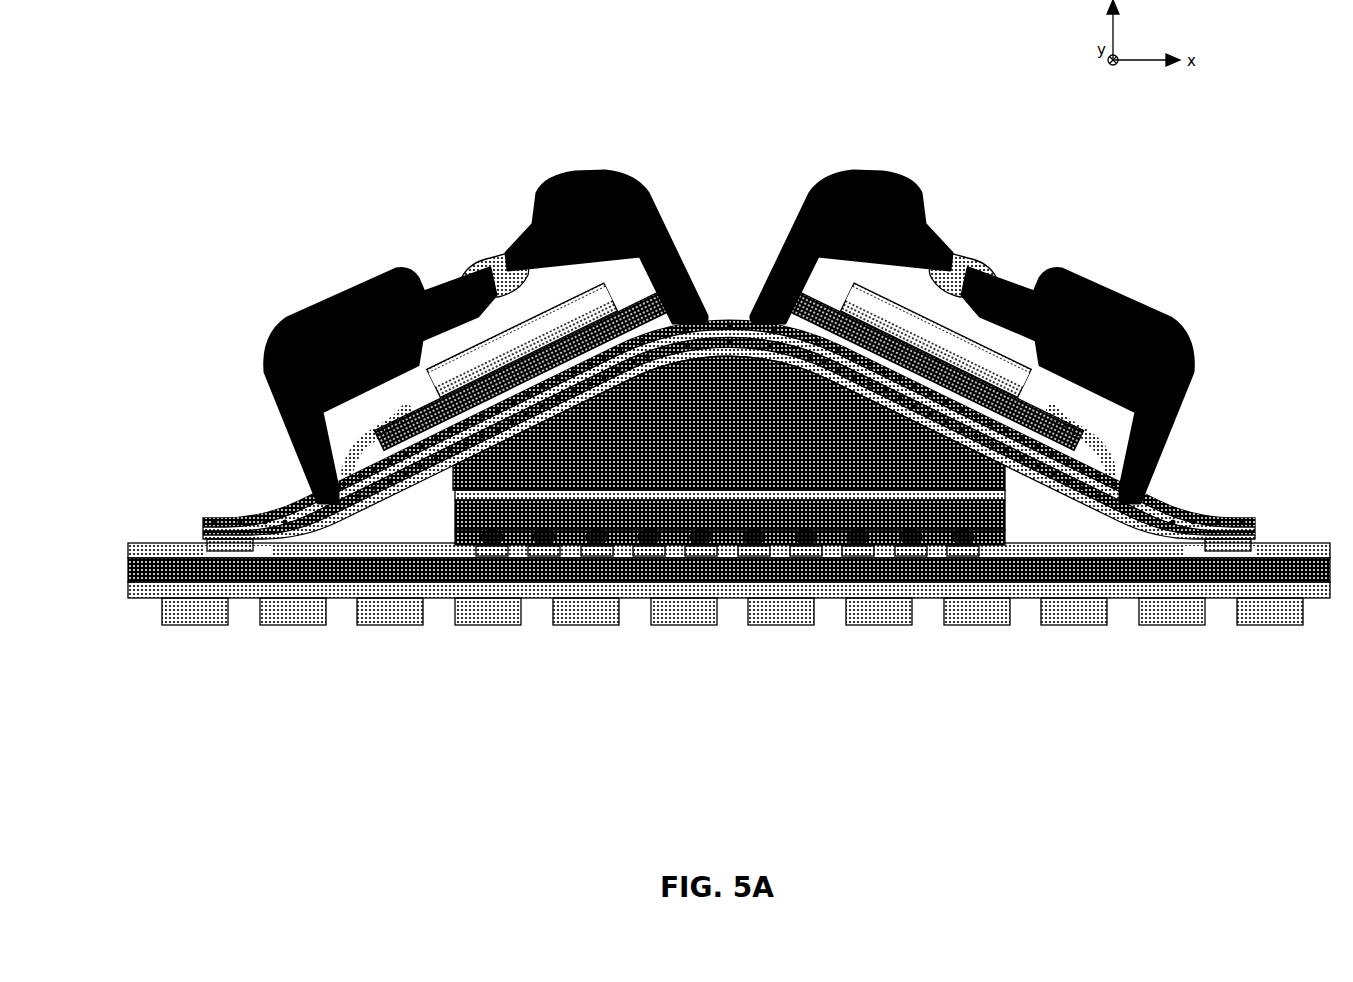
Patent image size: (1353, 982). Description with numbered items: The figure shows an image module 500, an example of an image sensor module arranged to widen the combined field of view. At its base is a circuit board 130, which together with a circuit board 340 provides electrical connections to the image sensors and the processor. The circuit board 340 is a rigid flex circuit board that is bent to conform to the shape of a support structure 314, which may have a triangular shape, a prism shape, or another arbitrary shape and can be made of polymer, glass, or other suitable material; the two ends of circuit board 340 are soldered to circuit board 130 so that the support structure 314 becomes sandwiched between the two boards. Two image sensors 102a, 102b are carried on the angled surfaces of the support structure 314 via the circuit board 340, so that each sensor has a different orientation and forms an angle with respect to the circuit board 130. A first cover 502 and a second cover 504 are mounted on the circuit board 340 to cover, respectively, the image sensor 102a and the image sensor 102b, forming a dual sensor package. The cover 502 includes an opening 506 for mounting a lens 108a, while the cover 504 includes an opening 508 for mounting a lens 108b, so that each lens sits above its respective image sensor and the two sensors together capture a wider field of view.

The image module 500 is at (170, 80).
The cover 502 is at (377, 280).
The cover 504 is at (1083, 275).
The opening 506 is at (492, 243).
The opening 508 is at (967, 259).
The image sensor 102a is at (673, 240).
The image sensor 102b is at (785, 240).
The lens 108a is at (502, 274).
The lens 108b is at (957, 280).
The circuit board 340 is at (302, 518).
The support structure 314 is at (1012, 492).
The circuit board 130 is at (136, 578).